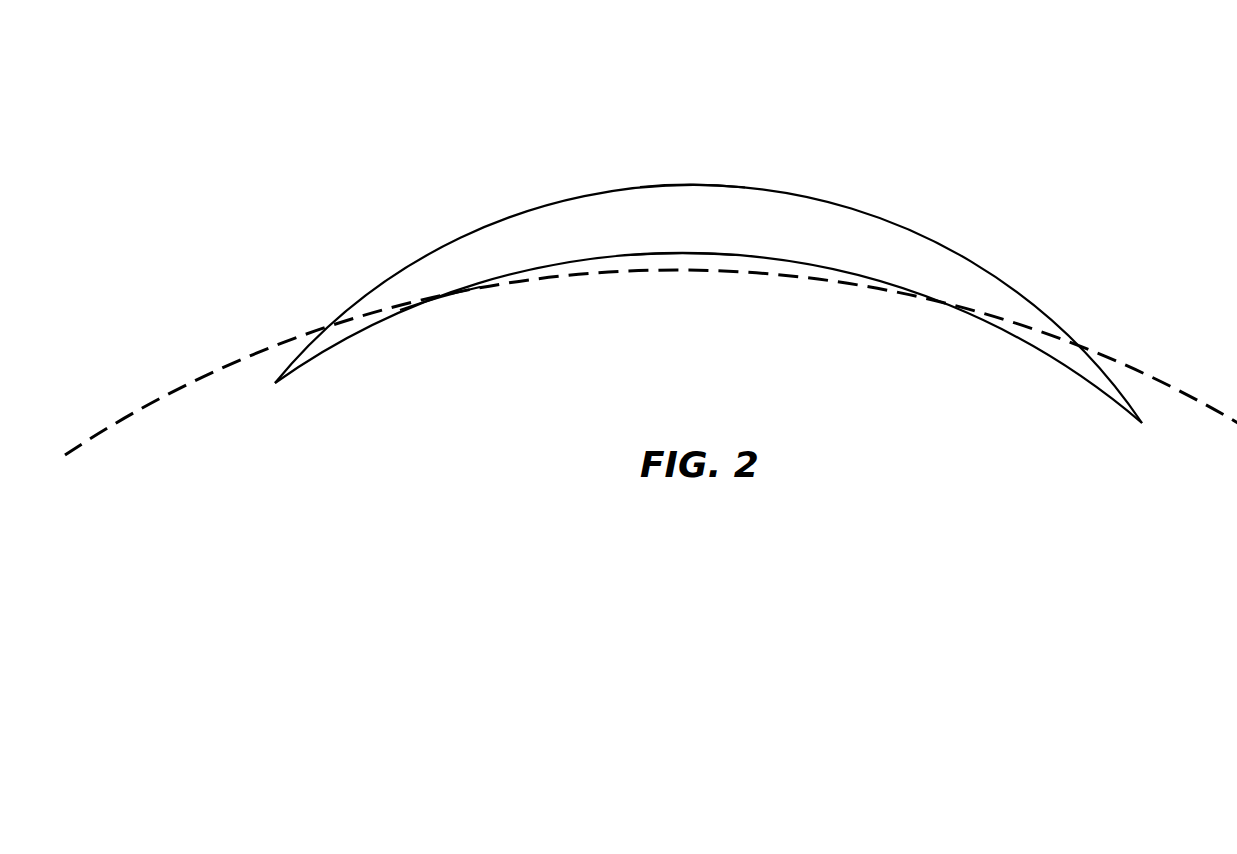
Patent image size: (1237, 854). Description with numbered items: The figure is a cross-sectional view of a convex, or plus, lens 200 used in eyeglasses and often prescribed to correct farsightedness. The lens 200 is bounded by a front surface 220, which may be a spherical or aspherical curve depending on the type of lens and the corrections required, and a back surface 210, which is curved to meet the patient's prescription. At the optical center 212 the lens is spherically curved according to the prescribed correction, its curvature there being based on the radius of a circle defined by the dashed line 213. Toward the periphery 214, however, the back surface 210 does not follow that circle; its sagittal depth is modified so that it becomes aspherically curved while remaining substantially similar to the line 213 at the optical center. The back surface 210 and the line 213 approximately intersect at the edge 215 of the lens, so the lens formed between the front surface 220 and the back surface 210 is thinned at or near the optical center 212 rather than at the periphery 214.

The convex lens 200 is at (418, 159).
The back surface 210 is at (678, 259).
The optical center 212 is at (692, 176).
The line 213 is at (854, 293).
The periphery 214 is at (513, 268).
The edge 215 is at (439, 298).
The front surface 220 is at (816, 193).